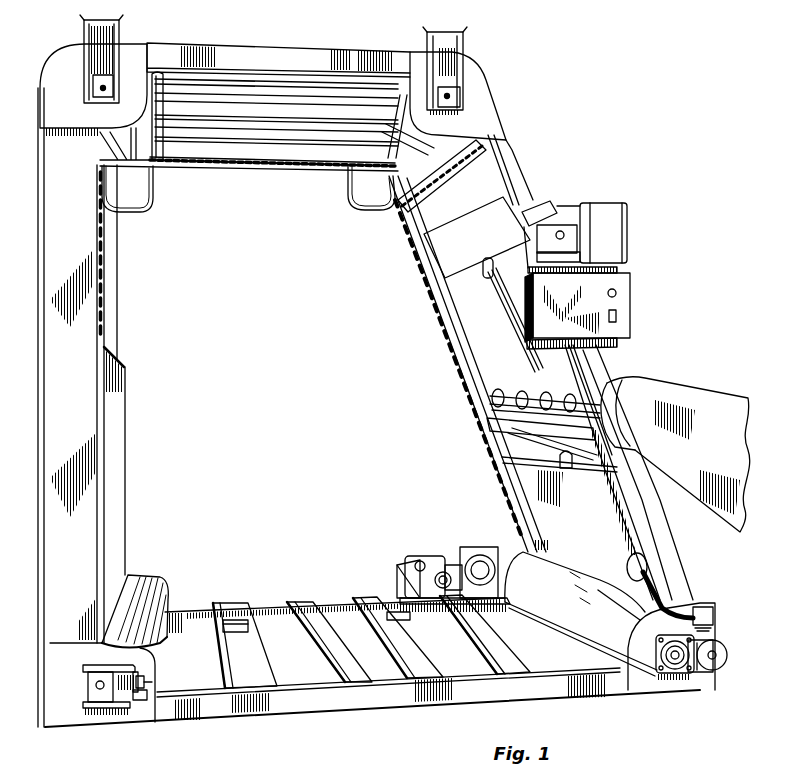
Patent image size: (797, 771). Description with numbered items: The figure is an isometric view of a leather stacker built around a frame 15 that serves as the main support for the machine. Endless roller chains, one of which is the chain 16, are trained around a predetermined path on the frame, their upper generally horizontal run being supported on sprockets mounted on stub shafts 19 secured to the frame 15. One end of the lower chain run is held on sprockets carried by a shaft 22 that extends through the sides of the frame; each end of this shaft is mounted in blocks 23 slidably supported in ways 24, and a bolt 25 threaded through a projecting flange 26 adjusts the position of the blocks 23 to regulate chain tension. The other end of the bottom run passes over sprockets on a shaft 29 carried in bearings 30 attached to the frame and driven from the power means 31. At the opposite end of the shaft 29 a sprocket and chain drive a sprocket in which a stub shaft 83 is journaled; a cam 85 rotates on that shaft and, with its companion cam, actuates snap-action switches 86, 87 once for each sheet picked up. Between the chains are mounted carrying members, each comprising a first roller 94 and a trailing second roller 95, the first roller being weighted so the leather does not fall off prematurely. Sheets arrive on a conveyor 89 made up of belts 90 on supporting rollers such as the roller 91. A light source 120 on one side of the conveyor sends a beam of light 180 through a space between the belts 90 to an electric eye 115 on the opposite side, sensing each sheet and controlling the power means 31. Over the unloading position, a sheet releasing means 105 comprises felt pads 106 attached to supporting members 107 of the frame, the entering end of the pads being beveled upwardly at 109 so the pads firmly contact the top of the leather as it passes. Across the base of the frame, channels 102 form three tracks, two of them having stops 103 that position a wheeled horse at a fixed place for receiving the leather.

The sheet releasing means 105 is at (233, 101).
The felt pads 106 is at (252, 82).
The supporting members 107 is at (366, 104).
The beveled entering end 109 is at (326, 108).
The stub shafts 19 is at (273, 77).
The frame 15 is at (519, 153).
The first roller 94 is at (403, 160).
The second roller 95 is at (452, 188).
The roller chain 16 is at (427, 236).
The electric eye 115 is at (485, 276).
The beam of light 180 is at (506, 301).
The conveyor 89 is at (660, 381).
The belts 90 is at (513, 394).
The supporting roller 91 is at (496, 400).
The light source 120 is at (568, 468).
The power means 31 is at (450, 548).
The channels 102 is at (223, 603).
The stops 103 is at (242, 620).
The ways 24 is at (90, 665).
The blocks 23 is at (88, 690).
The shaft 22 is at (100, 702).
The bolt 25 is at (150, 686).
The projecting flange 26 is at (148, 695).
The snap-action switch 86 is at (704, 608).
The snap-action switch 87 is at (714, 618).
The cam 85 is at (728, 657).
The stub shaft 83 is at (714, 665).
The shaft 29 is at (680, 668).
The bearings 30 is at (665, 676).